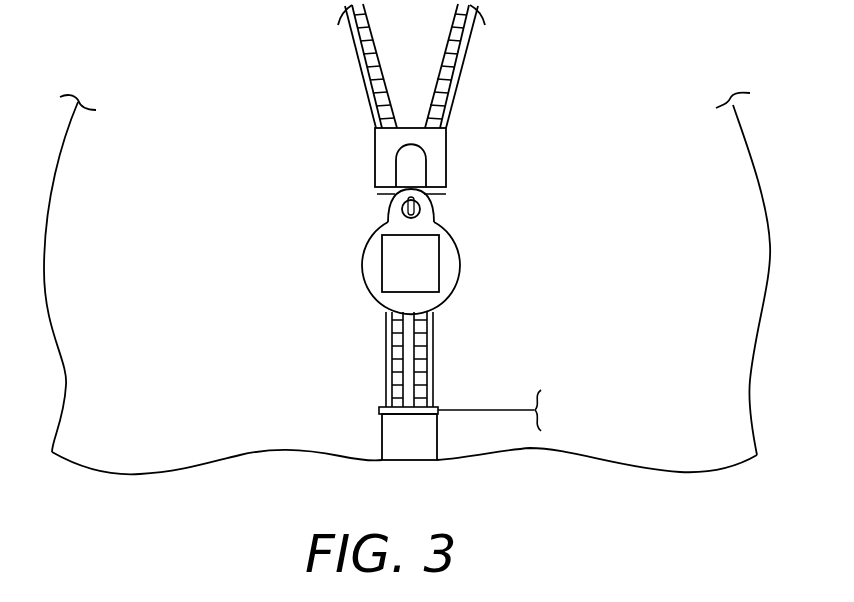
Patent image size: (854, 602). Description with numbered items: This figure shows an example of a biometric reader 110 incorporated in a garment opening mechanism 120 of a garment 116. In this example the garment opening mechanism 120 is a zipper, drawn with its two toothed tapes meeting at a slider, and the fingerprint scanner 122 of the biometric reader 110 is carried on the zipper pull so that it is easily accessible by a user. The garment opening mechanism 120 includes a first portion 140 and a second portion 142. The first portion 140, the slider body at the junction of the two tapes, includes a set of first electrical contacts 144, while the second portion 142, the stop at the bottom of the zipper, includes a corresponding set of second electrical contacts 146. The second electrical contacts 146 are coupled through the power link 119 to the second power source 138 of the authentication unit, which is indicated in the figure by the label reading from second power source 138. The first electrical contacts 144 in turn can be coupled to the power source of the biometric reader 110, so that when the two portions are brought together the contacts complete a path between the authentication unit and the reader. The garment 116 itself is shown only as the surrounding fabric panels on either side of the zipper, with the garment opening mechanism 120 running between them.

The garment 116 is at (163, 217).
The garment opening mechanism 120 is at (586, 263).
The first portion 140 is at (384, 172).
The first electrical contacts 144 is at (384, 193).
The biometric reader 110 is at (457, 222).
The fingerprint scanner 122 is at (432, 267).
The second portion 142 is at (382, 440).
The second electrical contacts 146 is at (380, 411).
The power link 119 is at (506, 410).
The second power source 138 is at (643, 411).